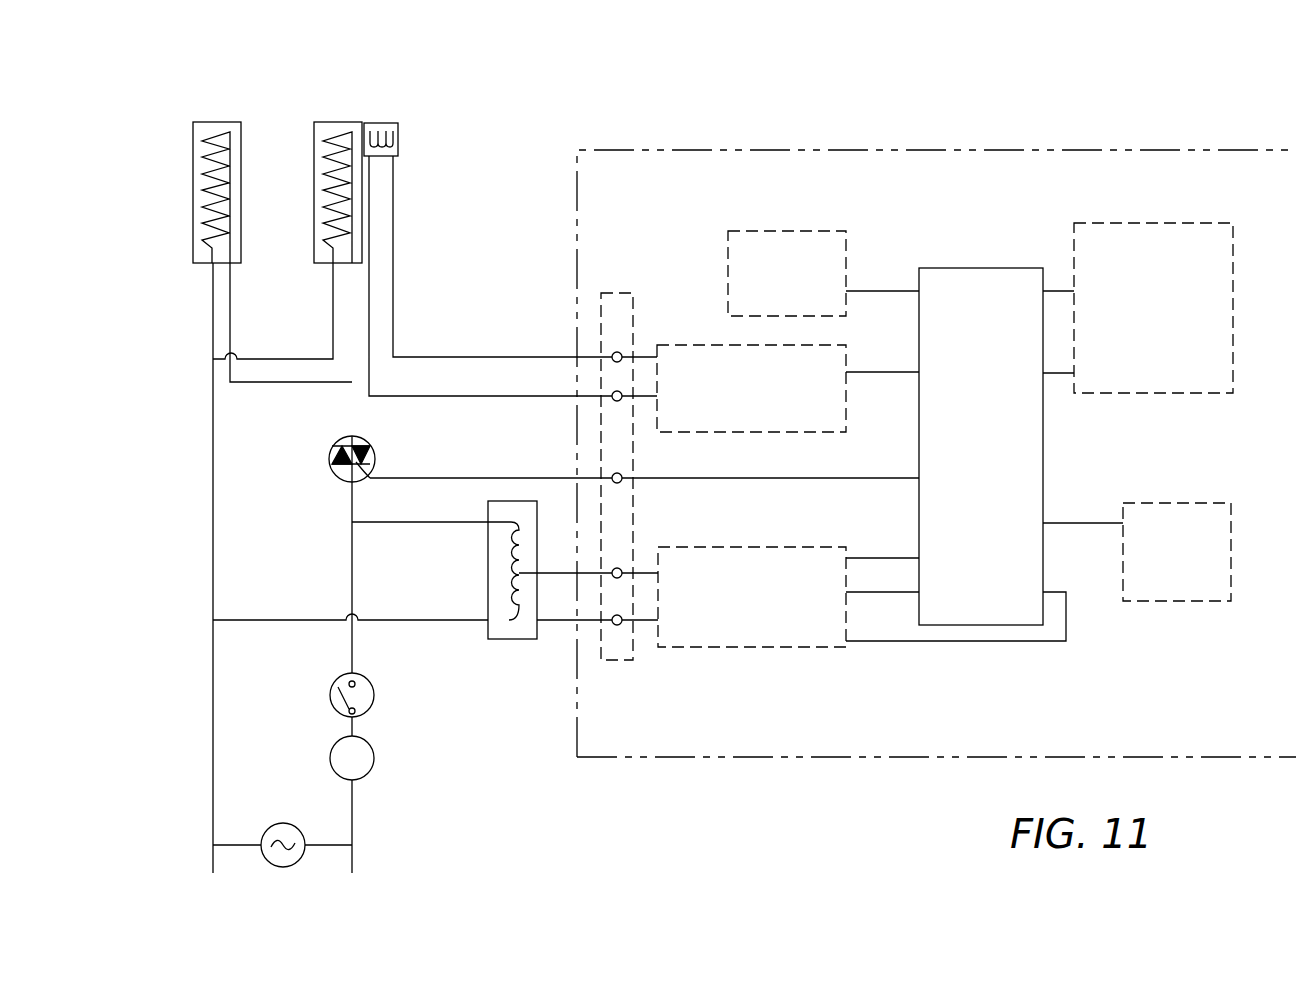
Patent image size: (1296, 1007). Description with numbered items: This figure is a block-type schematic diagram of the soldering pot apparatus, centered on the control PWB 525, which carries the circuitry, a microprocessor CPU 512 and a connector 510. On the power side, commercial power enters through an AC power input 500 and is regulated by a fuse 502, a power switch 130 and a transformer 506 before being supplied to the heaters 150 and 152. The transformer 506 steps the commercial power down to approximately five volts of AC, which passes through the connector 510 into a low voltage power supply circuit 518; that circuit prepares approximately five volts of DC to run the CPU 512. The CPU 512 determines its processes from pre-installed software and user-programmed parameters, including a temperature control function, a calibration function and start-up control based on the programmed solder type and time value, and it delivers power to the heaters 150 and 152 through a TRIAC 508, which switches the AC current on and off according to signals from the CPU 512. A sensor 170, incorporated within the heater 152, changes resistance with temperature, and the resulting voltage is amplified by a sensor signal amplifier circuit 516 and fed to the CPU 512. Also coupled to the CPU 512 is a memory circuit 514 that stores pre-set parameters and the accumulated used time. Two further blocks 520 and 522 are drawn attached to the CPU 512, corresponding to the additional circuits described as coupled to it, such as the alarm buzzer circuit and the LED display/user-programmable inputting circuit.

The power switch 130 is at (374, 695).
The heater 150 is at (220, 122).
The heater 152 is at (338, 122).
The sensor 170 is at (398, 138).
The AC power input 500 is at (283, 815).
The fuse 502 is at (374, 758).
The transformer 506 is at (512, 640).
The TRIAC 508 is at (329, 460).
The connector 510 is at (617, 293).
The microprocessor CPU 512 is at (998, 430).
The memory circuit 514 is at (800, 282).
The sensor signal amplifier circuit 516 is at (762, 393).
The low voltage power supply circuit 518 is at (760, 600).
The circuit block 520 is at (1166, 317).
The circuit block 522 is at (1195, 562).
The control PWB 525 is at (1212, 724).